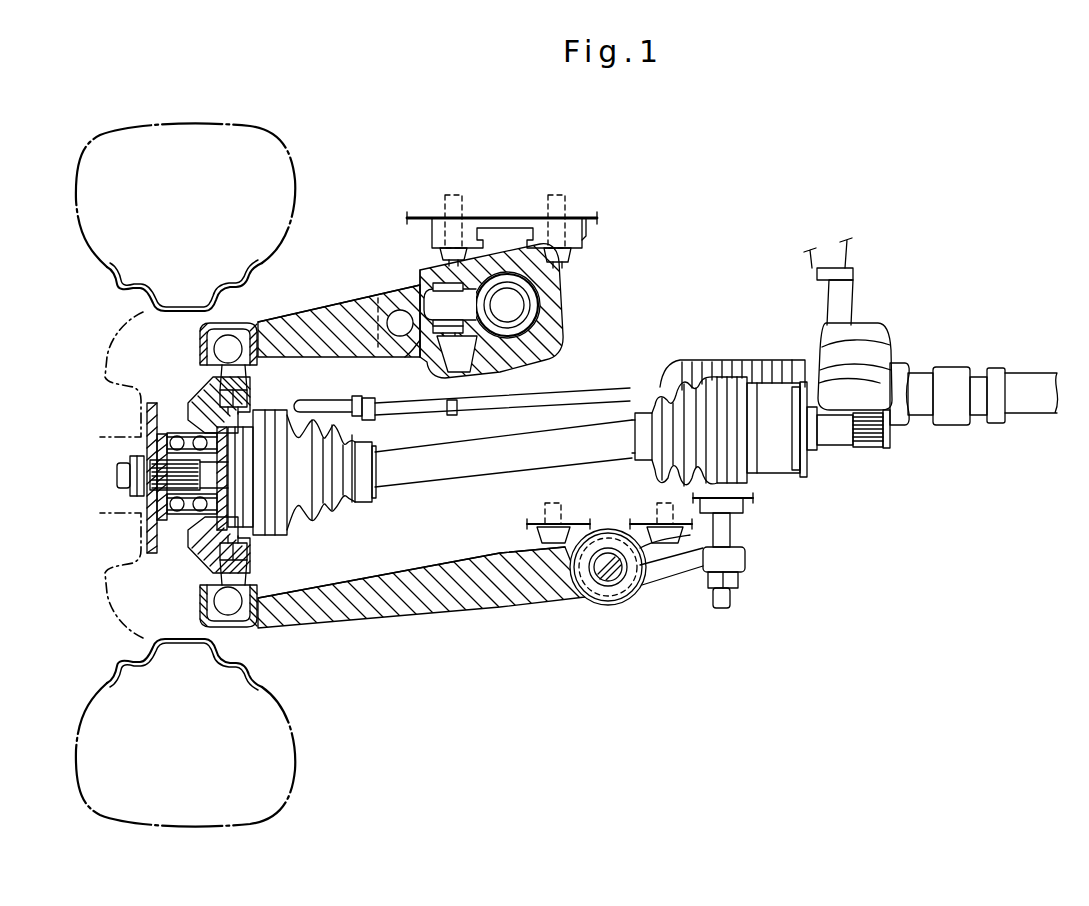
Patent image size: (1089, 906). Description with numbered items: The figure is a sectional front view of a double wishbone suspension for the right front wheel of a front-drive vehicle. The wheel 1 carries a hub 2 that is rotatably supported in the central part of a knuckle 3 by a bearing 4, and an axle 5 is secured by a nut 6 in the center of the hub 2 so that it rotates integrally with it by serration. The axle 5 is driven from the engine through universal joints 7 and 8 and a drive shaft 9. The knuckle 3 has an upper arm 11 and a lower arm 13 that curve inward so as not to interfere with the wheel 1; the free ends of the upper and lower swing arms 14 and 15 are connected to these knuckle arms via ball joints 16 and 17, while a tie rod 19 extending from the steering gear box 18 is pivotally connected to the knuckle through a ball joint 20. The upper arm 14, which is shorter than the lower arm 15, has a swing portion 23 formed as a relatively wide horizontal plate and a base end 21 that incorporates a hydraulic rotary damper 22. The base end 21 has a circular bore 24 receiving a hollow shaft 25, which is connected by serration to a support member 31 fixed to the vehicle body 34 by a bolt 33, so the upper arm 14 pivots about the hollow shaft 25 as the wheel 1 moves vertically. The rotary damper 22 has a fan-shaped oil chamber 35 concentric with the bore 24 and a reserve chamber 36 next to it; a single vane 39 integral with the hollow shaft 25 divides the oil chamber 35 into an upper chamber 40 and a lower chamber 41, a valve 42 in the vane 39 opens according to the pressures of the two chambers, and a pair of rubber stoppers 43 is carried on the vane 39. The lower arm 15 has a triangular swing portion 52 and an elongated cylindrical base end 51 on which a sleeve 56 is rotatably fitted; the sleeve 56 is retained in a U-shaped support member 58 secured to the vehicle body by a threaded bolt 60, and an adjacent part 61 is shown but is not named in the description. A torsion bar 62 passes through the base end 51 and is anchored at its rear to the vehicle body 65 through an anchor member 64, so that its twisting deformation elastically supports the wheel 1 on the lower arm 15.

The wheel 1 is at (283, 150).
The hub 2 is at (146, 537).
The knuckle 3 is at (188, 412).
The bearing 4 is at (177, 430).
The axle 5 is at (153, 528).
The nut 6 is at (128, 490).
The universal joint 7 is at (283, 522).
The universal joint 8 is at (763, 475).
The drive shaft 9 is at (455, 472).
The upper arm 11 is at (210, 388).
The lower arm 13 is at (200, 558).
The upper swing arm 14 is at (318, 318).
The lower swing arm 15 is at (427, 618).
The ball joint 16 is at (252, 368).
The ball joint 17 is at (256, 586).
The steering gear box 18 is at (916, 365).
The tie rod 19 is at (568, 398).
The ball joint 20 is at (287, 406).
The base end 21 is at (500, 433).
The hydraulic rotary damper 22 is at (441, 348).
The swing portion 23 is at (340, 305).
The circular bore 24 is at (540, 318).
The hollow shaft 25 is at (537, 278).
The support member 31 is at (511, 217).
The bolt 33 is at (445, 205).
The vehicle body 34 is at (598, 220).
The oil chamber 35 is at (412, 285).
The reserve chamber 36 is at (400, 310).
The vane 39 is at (380, 342).
The upper chamber 40 is at (436, 288).
The lower chamber 41 is at (467, 360).
The valve 42 is at (447, 340).
The rubber stoppers 43 is at (410, 325).
The base end 51 is at (600, 606).
The swing portion 52 is at (413, 568).
The sleeve 56 is at (623, 600).
The U-shaped support member 58 is at (653, 577).
The threaded bolt 60 is at (545, 510).
The mounting bracket 61 is at (527, 535).
The torsion bar 62 is at (592, 578).
The anchor member 64 is at (746, 562).
The vehicle body 65 is at (747, 503).